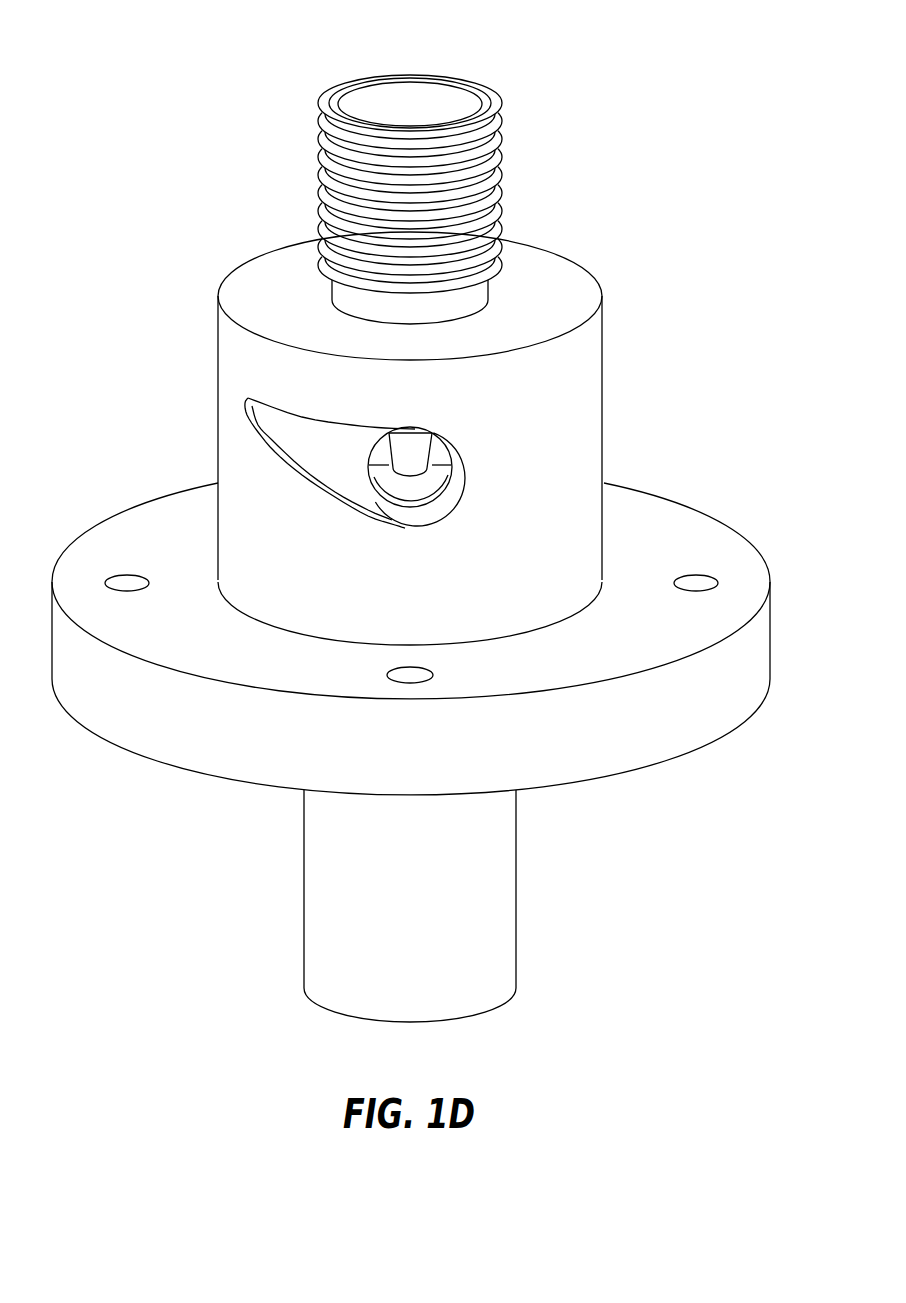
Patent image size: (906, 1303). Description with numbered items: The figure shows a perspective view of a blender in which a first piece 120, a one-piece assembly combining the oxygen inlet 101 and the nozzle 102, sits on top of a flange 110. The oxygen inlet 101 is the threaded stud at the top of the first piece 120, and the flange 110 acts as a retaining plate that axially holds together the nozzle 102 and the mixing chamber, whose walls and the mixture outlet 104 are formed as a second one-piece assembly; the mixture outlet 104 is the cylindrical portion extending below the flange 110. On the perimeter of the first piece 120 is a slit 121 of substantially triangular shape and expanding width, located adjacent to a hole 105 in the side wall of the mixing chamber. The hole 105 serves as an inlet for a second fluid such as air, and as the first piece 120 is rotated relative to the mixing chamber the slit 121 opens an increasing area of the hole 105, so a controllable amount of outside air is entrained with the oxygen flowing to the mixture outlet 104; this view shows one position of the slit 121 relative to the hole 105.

The oxygen inlet 101 is at (428, 103).
The first piece 120 is at (580, 353).
The slit 121 is at (303, 427).
The nozzle 102 is at (428, 445).
The hole 105 is at (408, 485).
The flange 110 is at (120, 547).
The mixture outlet 104 is at (472, 1018).